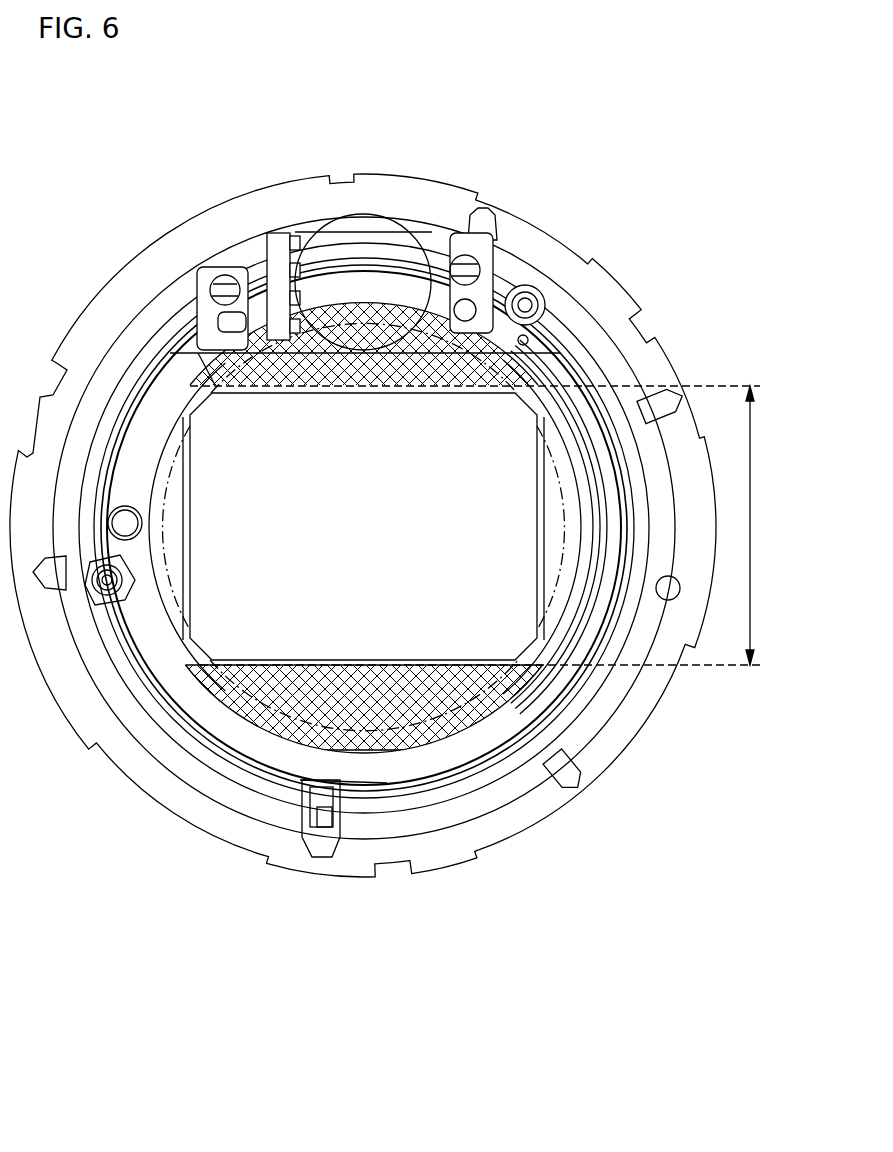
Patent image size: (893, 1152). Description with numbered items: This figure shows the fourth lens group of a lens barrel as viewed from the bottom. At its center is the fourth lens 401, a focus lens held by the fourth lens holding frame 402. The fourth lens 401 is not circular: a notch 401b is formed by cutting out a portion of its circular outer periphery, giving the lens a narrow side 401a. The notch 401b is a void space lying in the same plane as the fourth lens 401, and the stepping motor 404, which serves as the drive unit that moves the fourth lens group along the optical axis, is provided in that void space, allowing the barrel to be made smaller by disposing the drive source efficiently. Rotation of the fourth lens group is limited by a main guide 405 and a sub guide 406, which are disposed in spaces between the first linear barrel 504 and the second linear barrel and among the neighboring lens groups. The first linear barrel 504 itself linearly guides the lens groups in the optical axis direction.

The fourth lens 401 is at (233, 443).
The narrow side 401a is at (780, 525).
The notch 401b is at (277, 340).
The fourth lens holding frame 402 is at (265, 750).
The stepping motor 404 is at (374, 250).
The main guide 405 is at (525, 305).
The sub guide 406 is at (107, 582).
The first linear barrel 504 is at (620, 752).